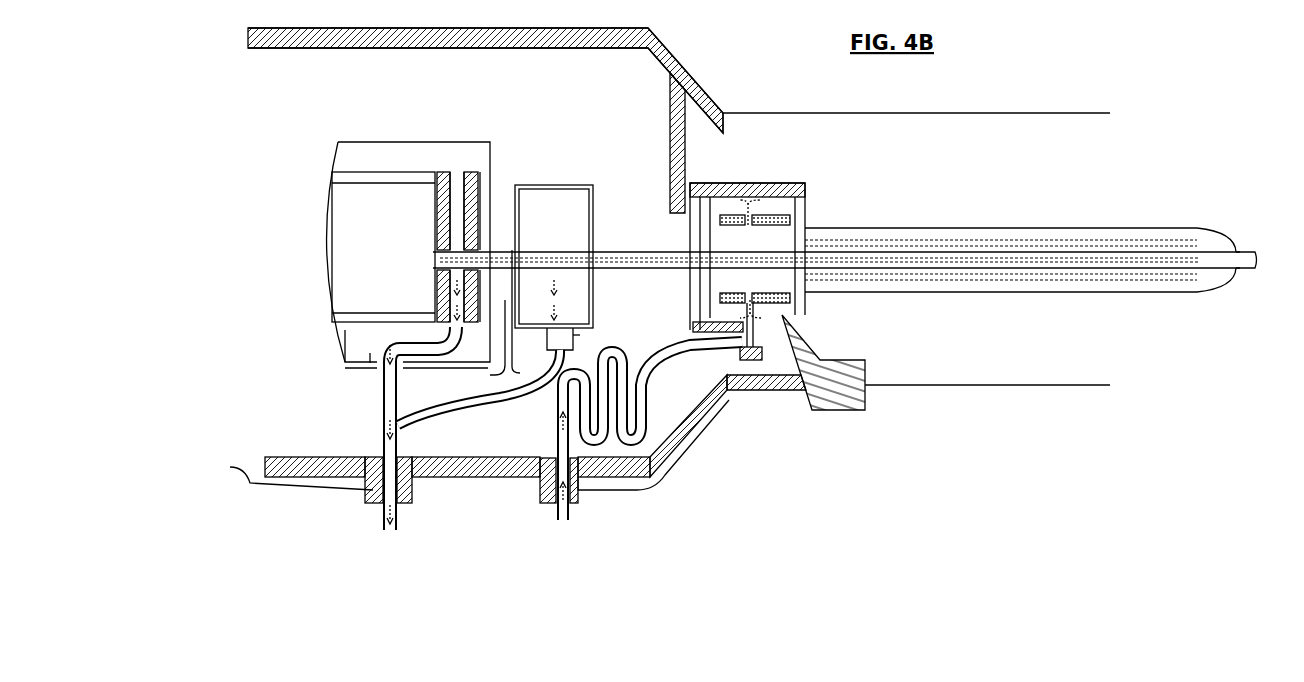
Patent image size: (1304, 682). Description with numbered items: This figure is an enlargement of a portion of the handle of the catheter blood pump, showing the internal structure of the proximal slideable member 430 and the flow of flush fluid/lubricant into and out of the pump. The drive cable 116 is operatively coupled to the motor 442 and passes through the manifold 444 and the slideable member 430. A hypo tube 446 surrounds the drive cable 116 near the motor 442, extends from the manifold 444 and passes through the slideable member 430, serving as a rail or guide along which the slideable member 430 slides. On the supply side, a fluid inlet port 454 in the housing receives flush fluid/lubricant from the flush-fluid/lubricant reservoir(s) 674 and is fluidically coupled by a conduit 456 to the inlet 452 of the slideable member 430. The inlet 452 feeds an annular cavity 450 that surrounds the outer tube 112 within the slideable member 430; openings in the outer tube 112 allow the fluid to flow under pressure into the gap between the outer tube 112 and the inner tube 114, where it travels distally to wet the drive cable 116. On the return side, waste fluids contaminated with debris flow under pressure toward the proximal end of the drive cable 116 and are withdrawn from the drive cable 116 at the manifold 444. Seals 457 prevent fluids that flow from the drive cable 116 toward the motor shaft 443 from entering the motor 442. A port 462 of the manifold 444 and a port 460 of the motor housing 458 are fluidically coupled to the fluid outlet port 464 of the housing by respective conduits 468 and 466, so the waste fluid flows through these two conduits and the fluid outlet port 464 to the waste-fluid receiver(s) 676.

The outer tube 112 is at (1200, 240).
The inner tube 114 is at (1220, 283).
The drive cable 116 is at (652, 252).
The slideable member 430 is at (805, 198).
The motor 442 is at (383, 247).
The motor shaft 443 is at (505, 300).
The manifold 444 is at (554, 267).
The hypo tube 446 is at (512, 250).
The annular cavity 450 is at (805, 318).
The inlet 452 is at (725, 375).
The fluid inlet port 454 is at (662, 470).
The conduit 456 is at (558, 408).
The seals 457 is at (456, 182).
The motor housing 458 is at (348, 158).
The port 460 is at (355, 368).
The port 462 is at (590, 337).
The fluid outlet port 464 is at (355, 479).
The conduit 466 is at (380, 408).
The conduit 468 is at (470, 408).
The flush-fluid/lubricant reservoir(s) 674 is at (564, 524).
The waste-fluid receiver(s) 676 is at (385, 525).